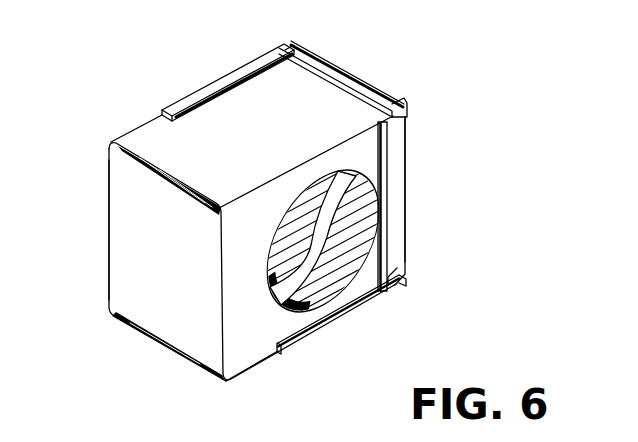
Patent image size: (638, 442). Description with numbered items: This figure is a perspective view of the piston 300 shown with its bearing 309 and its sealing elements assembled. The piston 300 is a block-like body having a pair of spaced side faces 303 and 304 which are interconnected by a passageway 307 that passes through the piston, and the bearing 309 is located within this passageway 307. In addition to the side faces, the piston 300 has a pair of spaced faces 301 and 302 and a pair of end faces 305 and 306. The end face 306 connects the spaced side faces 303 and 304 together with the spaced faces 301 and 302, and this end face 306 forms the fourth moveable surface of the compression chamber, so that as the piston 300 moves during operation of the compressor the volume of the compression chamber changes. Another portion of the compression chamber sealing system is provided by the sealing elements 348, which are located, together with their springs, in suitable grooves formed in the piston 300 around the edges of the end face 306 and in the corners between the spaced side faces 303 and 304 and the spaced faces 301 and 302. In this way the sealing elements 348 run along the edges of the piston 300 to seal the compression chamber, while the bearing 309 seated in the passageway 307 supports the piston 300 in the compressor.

The piston 300 is at (112, 142).
The spaced face 301 is at (225, 127).
The spaced face 302 is at (249, 373).
The side face 303 is at (373, 279).
The side face 304 is at (108, 204).
The end face 305 is at (157, 312).
The end face 306 is at (406, 181).
The passageway 307 is at (326, 294).
The bearing 309 is at (345, 190).
The sealing elements 348 is at (183, 105).